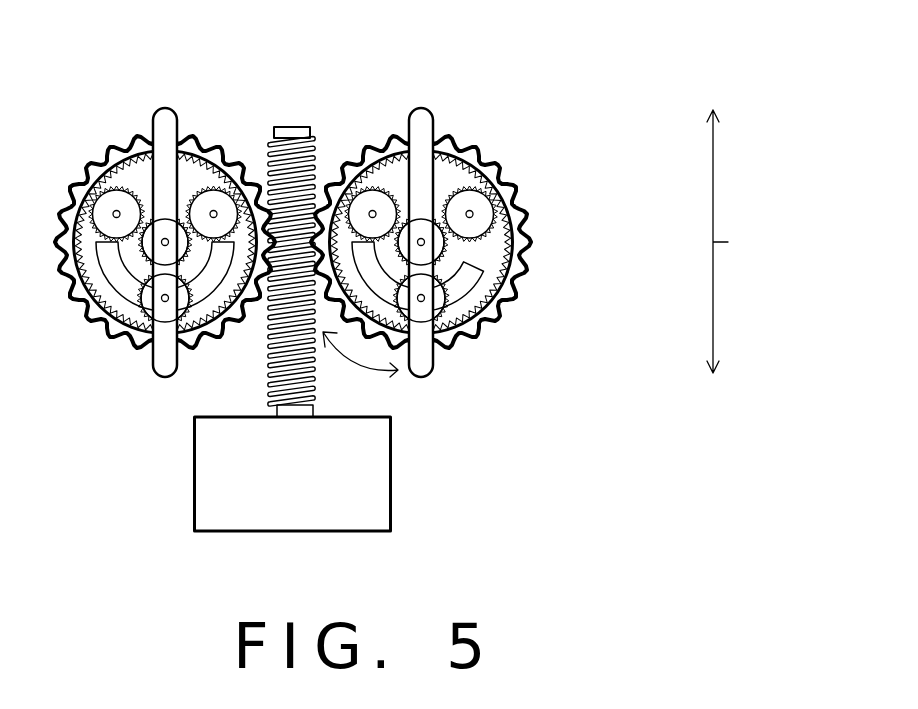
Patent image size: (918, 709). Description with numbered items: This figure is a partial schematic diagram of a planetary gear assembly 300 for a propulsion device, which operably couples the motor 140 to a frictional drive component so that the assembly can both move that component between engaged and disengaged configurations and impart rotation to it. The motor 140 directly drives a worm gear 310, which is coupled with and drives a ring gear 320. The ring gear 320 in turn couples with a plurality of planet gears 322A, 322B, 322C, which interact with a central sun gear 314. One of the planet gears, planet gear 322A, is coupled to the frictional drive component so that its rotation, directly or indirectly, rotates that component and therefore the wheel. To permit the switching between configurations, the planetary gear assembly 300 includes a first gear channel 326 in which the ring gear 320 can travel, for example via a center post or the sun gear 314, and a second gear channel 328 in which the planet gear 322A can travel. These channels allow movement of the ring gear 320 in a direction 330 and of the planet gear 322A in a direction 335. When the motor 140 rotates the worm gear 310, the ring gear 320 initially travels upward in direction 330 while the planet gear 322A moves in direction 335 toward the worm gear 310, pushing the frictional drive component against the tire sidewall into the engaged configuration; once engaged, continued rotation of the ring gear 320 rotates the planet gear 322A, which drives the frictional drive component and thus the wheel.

The planetary gear assembly 300 is at (507, 243).
The worm gear 310 is at (291, 127).
The sun gear 314 is at (423, 239).
The ring gear 320 is at (474, 336).
The planet gear 322A is at (425, 298).
The planet gear 322B is at (473, 213).
The planet gear 322C is at (371, 210).
The first gear channel 326 is at (423, 109).
The second gear channel 328 is at (468, 267).
The direction 330 is at (757, 241).
The direction 335 is at (355, 363).
The motor 140 is at (293, 474).